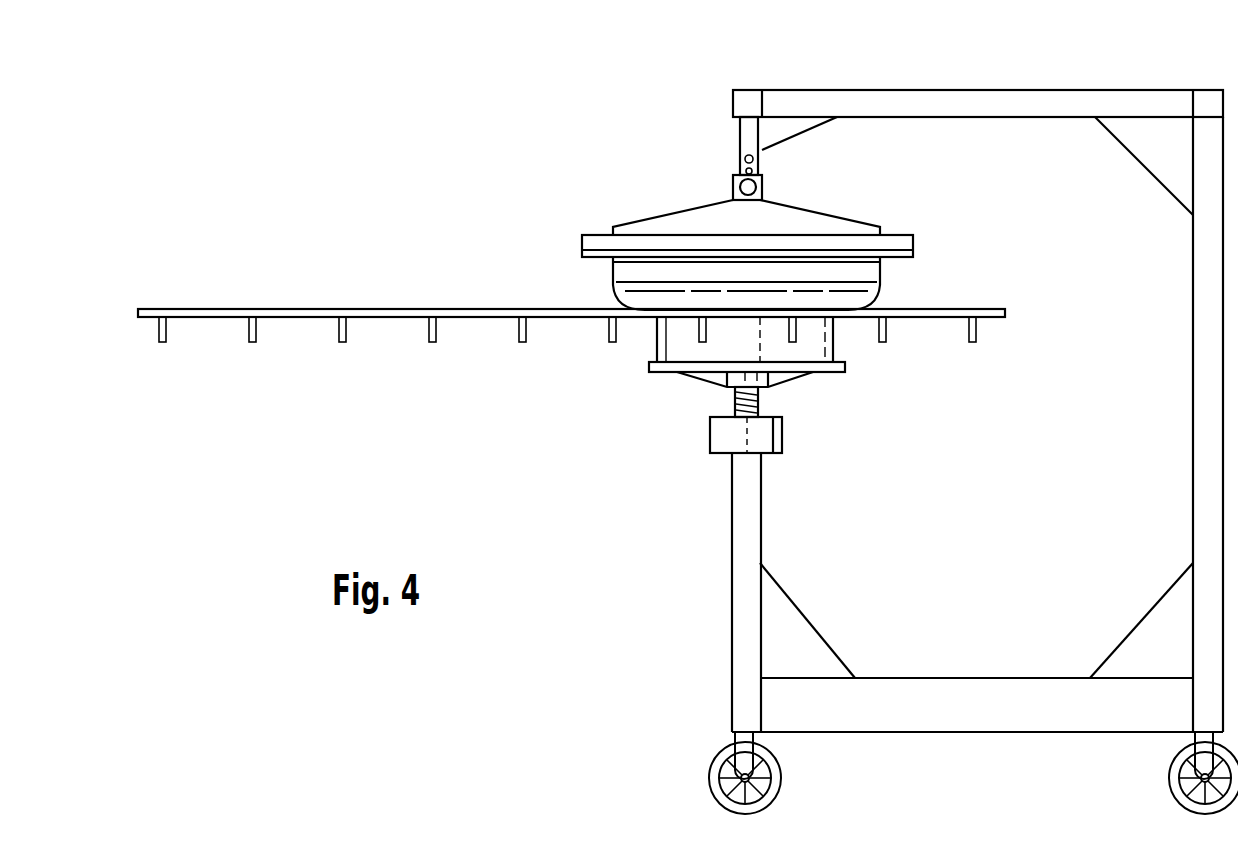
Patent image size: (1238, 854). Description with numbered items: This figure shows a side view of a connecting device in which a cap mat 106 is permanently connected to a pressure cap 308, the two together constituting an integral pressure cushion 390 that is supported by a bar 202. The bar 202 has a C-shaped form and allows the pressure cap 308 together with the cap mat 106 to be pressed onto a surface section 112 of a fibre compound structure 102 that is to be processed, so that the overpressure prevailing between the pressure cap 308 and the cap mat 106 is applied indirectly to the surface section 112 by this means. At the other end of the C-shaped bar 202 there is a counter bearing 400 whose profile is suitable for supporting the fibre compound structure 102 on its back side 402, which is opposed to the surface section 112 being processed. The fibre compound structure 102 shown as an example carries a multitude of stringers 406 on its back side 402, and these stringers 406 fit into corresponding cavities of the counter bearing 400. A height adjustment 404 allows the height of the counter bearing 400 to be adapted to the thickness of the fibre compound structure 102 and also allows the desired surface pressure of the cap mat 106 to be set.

The fibre compound structure 102 is at (571, 322).
The cap mat 106 is at (863, 273).
The surface section 112 is at (617, 302).
The bar 202 is at (962, 103).
The pressure cap 308 is at (822, 245).
The integral pressure cushion 390 is at (778, 187).
The counter bearing 400 is at (825, 338).
The back side 402 is at (387, 318).
The height adjustment 404 is at (773, 432).
The stringers 406 is at (245, 328).